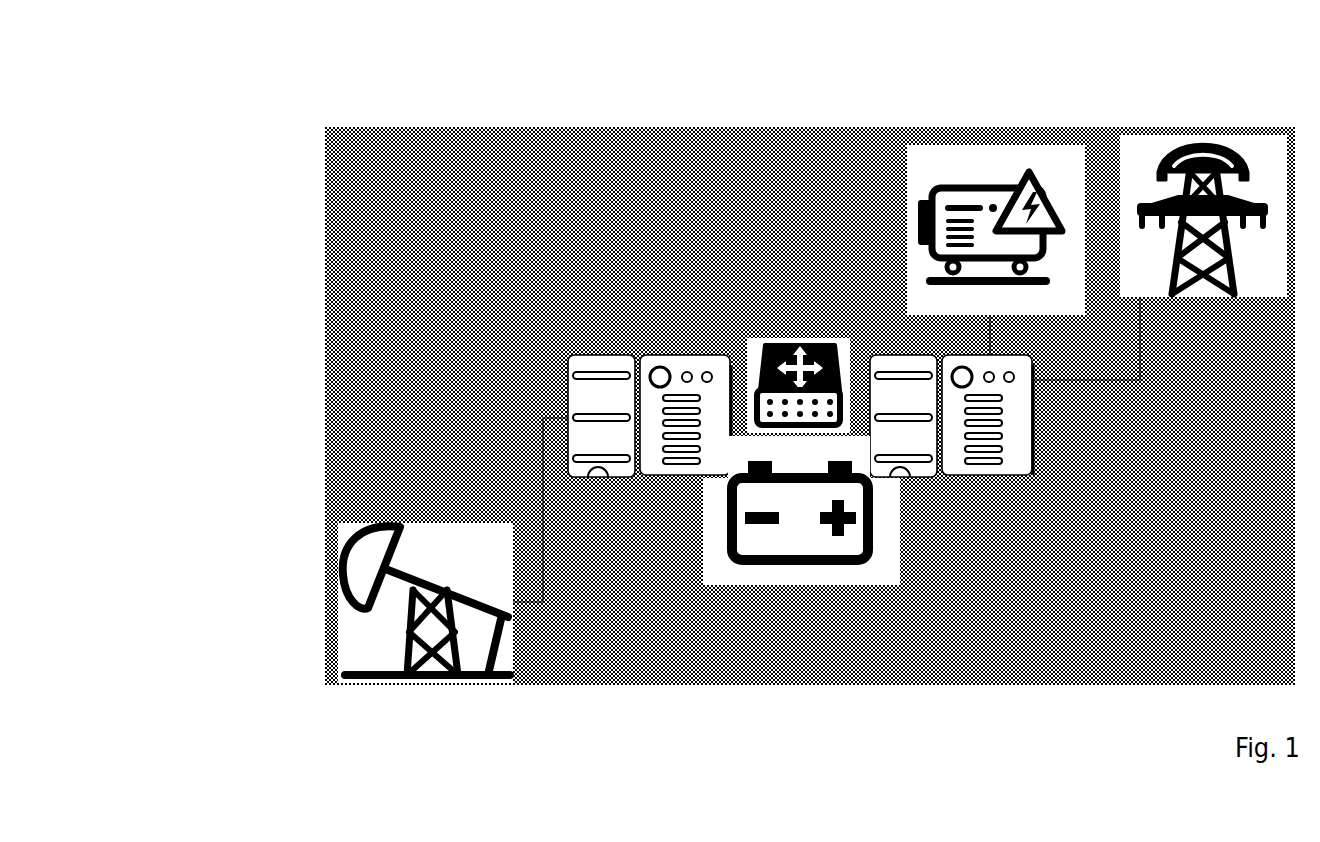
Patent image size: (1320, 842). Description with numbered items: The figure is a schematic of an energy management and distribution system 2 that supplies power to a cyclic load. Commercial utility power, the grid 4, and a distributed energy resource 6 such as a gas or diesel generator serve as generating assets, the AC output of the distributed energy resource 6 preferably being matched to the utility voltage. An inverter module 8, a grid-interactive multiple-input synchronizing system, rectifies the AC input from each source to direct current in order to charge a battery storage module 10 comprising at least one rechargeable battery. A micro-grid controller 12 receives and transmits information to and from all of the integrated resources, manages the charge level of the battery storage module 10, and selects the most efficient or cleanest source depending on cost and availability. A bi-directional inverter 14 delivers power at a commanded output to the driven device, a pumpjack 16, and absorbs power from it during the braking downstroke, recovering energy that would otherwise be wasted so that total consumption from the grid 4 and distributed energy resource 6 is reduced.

The system 2 is at (646, 281).
The grid 4 is at (1246, 147).
The distributed energy resource 6 is at (981, 157).
The inverter module 8 is at (1041, 423).
The battery storage module 10 is at (881, 556).
The micro-grid controller 12 is at (800, 337).
The bi-directional inverter 14 is at (569, 351).
The pumpjack 16 is at (340, 596).